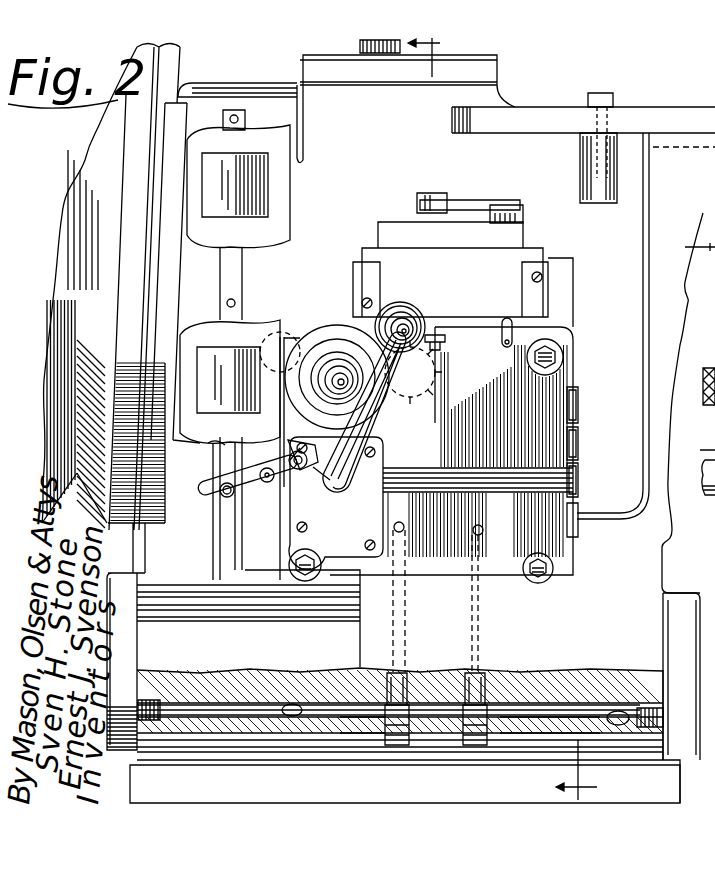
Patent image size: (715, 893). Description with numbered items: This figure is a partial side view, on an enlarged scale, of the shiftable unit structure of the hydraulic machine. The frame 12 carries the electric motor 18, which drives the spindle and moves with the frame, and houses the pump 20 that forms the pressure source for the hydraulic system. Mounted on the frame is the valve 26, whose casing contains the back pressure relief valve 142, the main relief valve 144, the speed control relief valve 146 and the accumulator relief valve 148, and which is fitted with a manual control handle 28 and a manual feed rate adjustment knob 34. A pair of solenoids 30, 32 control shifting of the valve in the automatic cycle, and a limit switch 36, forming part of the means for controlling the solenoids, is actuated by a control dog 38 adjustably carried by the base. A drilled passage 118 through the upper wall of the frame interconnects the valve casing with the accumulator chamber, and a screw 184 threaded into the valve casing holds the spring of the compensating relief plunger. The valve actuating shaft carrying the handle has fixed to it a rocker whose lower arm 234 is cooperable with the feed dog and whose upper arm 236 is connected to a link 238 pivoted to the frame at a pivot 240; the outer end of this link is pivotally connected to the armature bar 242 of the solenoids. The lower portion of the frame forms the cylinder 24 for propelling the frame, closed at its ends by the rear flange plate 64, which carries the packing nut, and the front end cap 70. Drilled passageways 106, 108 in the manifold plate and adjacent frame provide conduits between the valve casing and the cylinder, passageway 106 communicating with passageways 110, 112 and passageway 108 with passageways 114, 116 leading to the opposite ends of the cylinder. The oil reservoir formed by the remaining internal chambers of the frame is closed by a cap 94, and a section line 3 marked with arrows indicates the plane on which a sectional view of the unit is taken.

The electric motor 18 is at (70, 197).
The cap 94 is at (297, 72).
The section line 3- 3 is at (485, 418).
The frame 12 is at (500, 103).
The control dog 38 is at (614, 204).
The pump 20 is at (688, 403).
The solenoid 30 is at (247, 180).
The solenoid 32 is at (230, 360).
The limit switch 36 is at (515, 263).
The manual control handle 28 is at (400, 308).
The accumulator load or relief valve 148 is at (443, 317).
The manual feed rate adjustment knob 34 is at (325, 333).
The screw 184 is at (432, 352).
The drilled passage 118 is at (503, 348).
The valve 26 is at (548, 540).
The speed control load or relief valve 146 is at (578, 405).
The main relief valve 144 is at (578, 445).
The back pressure relief valve 142 is at (578, 485).
The pivot 240 is at (258, 467).
The armature bar 242 is at (222, 445).
The link 238 is at (262, 481).
The upper arm 236 is at (293, 497).
The lower arm 234 is at (305, 496).
The front end cap 70 is at (670, 617).
The flange plate 64 is at (125, 642).
The cylinder 24 is at (230, 673).
The passageway 116 is at (292, 703).
The drilled passageway 108 is at (407, 653).
The drilled passageway 106 is at (483, 657).
The passageway 114 is at (363, 713).
The passageway 110 is at (527, 717).
The passageway 112 is at (620, 724).